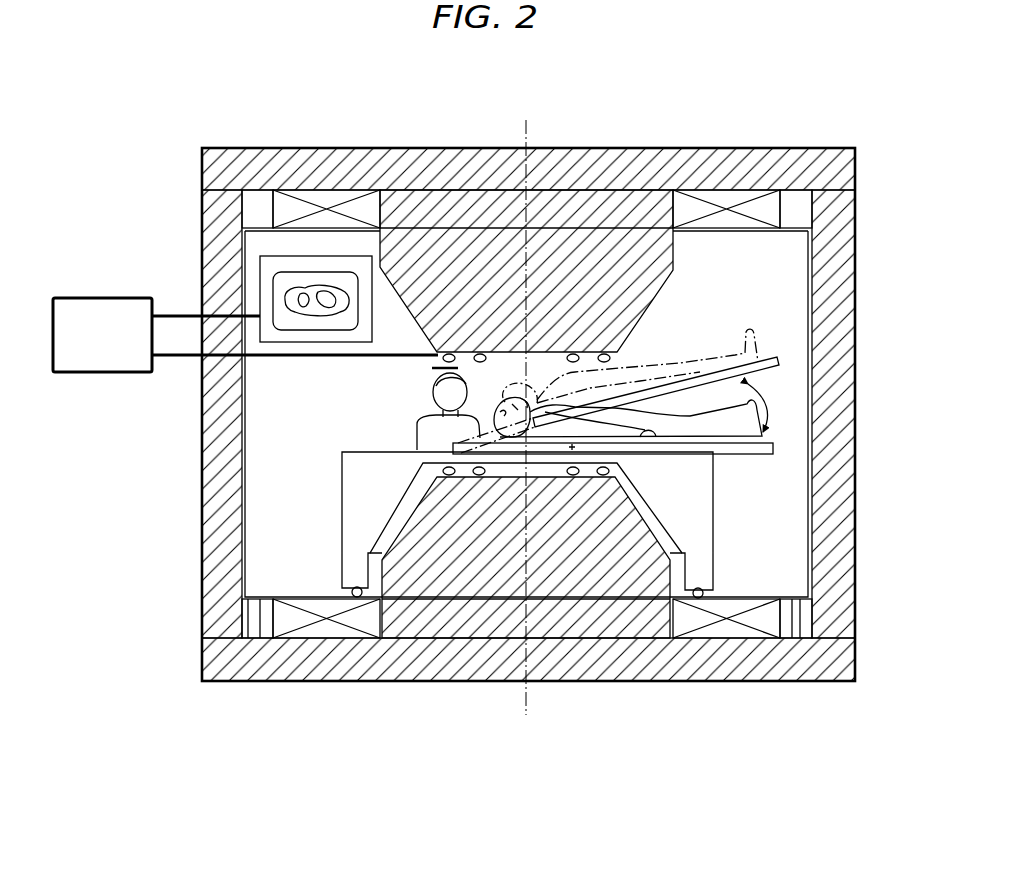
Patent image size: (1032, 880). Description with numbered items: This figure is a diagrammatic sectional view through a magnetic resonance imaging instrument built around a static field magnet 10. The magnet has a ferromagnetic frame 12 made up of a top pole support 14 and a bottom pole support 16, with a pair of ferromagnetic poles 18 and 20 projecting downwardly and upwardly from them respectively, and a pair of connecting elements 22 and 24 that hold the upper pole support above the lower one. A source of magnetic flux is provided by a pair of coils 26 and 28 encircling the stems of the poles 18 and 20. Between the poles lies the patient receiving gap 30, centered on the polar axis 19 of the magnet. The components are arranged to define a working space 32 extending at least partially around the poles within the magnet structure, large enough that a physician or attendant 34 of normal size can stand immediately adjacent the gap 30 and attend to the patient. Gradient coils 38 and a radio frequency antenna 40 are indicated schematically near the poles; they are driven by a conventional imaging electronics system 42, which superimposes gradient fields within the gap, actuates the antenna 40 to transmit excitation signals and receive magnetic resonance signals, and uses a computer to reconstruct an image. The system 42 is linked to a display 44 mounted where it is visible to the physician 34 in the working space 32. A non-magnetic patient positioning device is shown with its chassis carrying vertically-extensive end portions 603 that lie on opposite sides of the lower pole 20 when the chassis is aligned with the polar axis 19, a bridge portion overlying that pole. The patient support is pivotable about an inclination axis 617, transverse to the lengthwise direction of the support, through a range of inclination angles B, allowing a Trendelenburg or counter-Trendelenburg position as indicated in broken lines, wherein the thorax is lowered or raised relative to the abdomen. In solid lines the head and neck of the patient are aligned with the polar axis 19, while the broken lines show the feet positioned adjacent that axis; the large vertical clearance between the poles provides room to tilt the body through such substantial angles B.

The static field magnet 10 is at (778, 93).
The ferromagnetic frame 12 is at (866, 167).
The top pole support 14 is at (641, 148).
The bottom pole support 16 is at (690, 670).
The upper pole 18 is at (420, 180).
The polar axis 19 is at (528, 140).
The lower pole 20 is at (420, 582).
The connecting element 22 is at (202, 565).
The connecting element 24 is at (845, 403).
The coil 26 is at (775, 210).
The coil 28 is at (772, 625).
The patient receiving gap 30 is at (622, 361).
The working space 32 is at (262, 473).
The physician or attendant 34 is at (412, 440).
The gradient coils 38 is at (603, 476).
The radio frequency antenna 40 is at (570, 476).
The imaging electronics system 42 is at (78, 297).
The display 44 is at (260, 283).
The end portions of chassis 603 is at (358, 597).
The inclination axis 617 is at (576, 447).
The inclination angle B is at (770, 405).